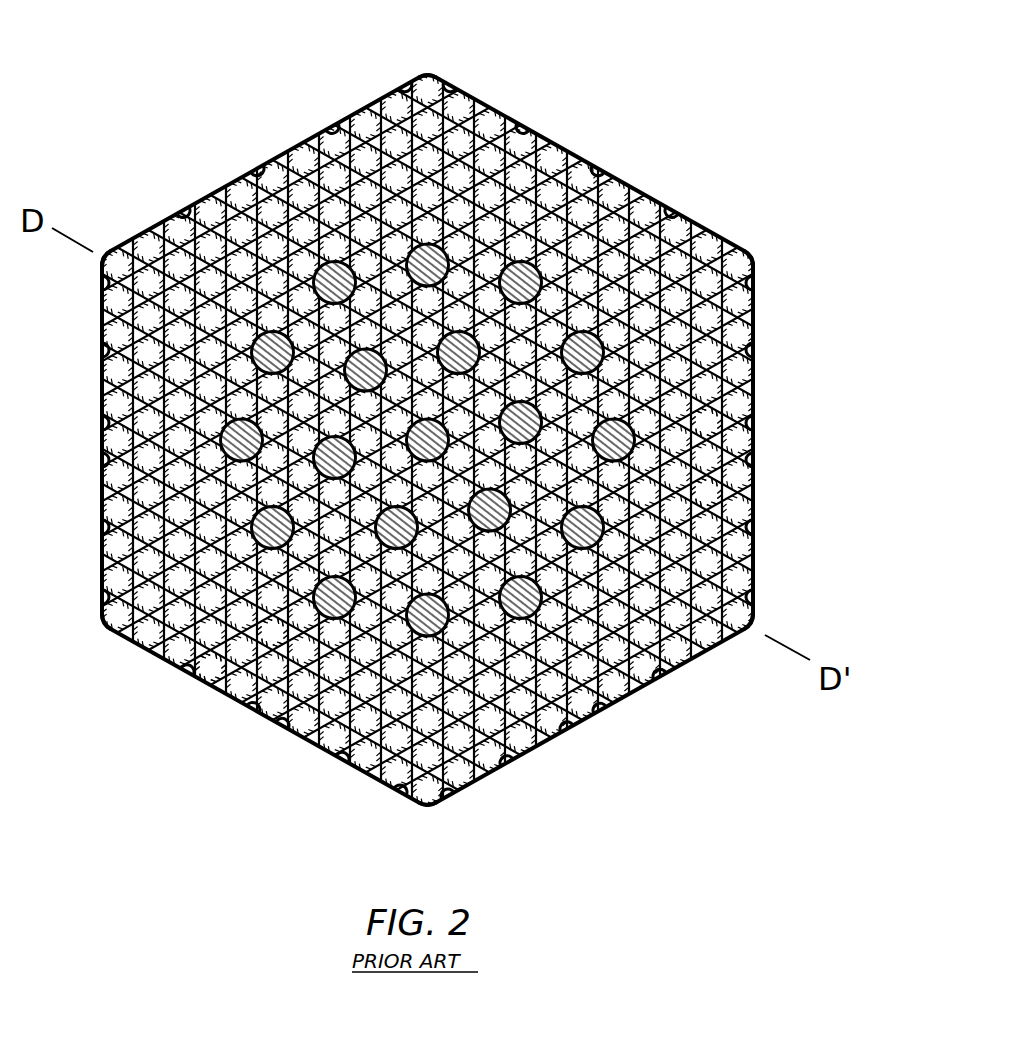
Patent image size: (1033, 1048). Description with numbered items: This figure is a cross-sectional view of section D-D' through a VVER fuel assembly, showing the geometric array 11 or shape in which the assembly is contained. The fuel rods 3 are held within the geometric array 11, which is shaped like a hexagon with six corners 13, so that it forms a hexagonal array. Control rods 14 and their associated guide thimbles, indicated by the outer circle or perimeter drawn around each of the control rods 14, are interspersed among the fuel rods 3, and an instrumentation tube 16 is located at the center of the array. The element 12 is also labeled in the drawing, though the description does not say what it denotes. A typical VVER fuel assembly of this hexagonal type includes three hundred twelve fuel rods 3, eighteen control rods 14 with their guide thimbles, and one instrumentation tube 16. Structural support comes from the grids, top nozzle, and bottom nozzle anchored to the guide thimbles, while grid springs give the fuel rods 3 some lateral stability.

The fuel rods 3 is at (270, 637).
The geometric array 11 is at (624, 112).
The spacer grid 12 is at (620, 645).
The corners 13 is at (434, 60).
The control rods 14 is at (157, 503).
The instrumentation tube 16 is at (426, 440).